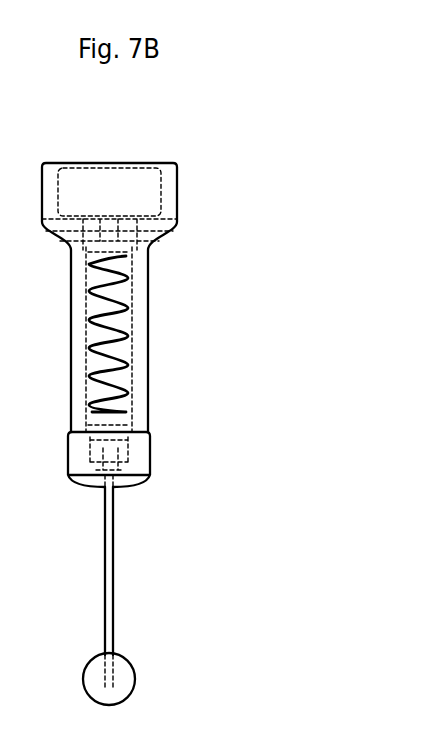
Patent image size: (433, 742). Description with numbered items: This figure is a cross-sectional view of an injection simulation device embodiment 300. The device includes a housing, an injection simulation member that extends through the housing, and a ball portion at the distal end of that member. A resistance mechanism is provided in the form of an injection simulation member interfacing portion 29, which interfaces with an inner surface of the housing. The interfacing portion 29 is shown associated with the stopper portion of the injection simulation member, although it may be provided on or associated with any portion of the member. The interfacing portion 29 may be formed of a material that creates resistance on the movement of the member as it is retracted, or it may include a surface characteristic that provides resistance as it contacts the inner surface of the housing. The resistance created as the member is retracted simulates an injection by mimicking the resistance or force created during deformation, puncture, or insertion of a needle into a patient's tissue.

The injection simulation device embodiment 300 is at (223, 183).
The injection simulation member interfacing portion 29 is at (130, 440).